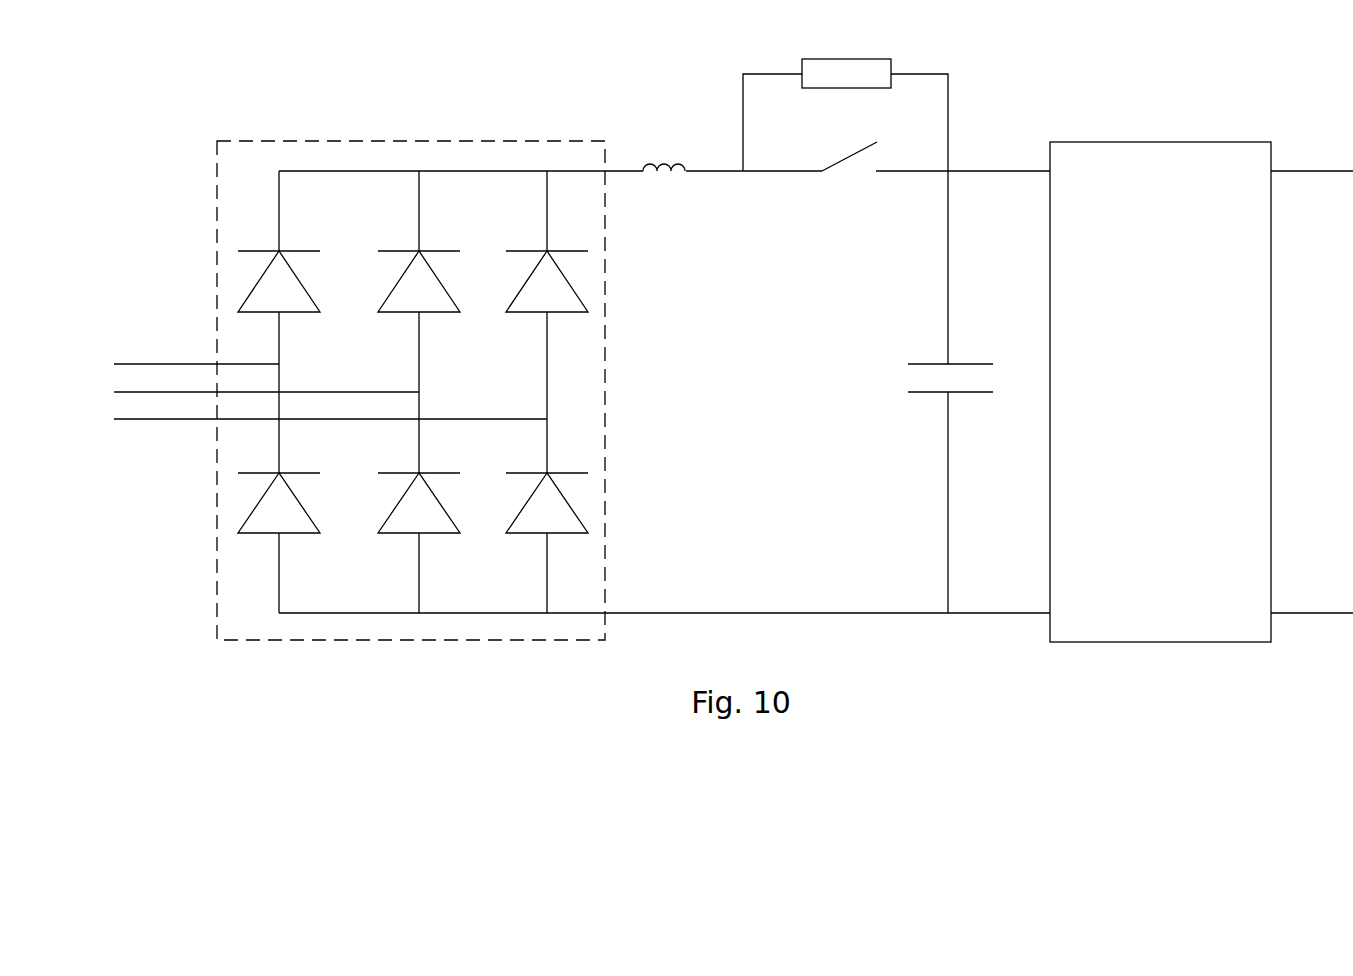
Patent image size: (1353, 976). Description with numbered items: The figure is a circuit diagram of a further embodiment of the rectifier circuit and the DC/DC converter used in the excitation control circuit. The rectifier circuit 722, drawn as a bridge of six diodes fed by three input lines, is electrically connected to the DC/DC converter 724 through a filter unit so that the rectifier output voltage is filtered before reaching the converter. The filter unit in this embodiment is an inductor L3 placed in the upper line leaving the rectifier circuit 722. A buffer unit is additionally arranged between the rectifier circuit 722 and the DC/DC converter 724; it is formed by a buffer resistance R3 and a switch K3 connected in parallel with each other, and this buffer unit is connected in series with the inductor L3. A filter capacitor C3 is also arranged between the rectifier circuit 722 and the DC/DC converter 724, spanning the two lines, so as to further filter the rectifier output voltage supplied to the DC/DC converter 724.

The rectifier circuit 722 is at (399, 141).
The DC/DC converter 724 is at (1164, 142).
The inductor L3 is at (732, 150).
The buffer resistance R3 is at (845, 192).
The switch K3 is at (936, 177).
The filter capacitor C3 is at (947, 467).